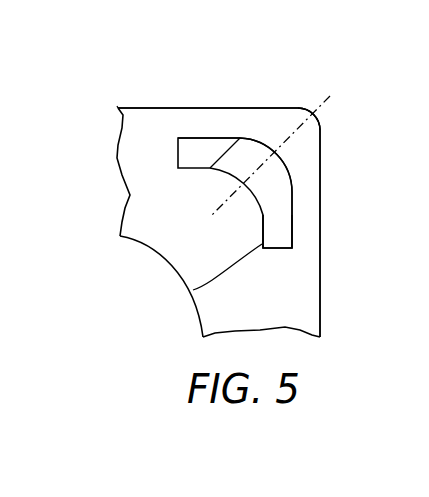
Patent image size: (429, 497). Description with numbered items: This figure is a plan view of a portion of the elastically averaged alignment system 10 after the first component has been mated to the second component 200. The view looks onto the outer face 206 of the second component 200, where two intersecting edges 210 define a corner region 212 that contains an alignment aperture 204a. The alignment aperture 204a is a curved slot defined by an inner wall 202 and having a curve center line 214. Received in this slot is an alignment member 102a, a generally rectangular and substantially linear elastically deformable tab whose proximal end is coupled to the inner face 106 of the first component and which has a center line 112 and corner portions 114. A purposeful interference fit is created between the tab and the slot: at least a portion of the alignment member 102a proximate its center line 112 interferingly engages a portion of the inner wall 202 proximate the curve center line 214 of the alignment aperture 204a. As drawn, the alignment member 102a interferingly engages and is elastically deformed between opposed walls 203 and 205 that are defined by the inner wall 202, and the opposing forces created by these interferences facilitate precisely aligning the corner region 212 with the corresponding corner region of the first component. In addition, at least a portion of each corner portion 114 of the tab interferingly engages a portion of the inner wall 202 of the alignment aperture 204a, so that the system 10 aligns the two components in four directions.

The elastically averaged alignment system 10 is at (337, 120).
The alignment member 102a is at (240, 152).
The inner face 106 is at (197, 150).
The center line 112 is at (288, 120).
The corner portion 114 is at (242, 140).
The second component 200 is at (288, 310).
The inner wall 202 is at (288, 237).
The opposed wall 203 is at (292, 226).
The alignment aperture 204a is at (193, 290).
The opposed wall 205 is at (260, 239).
The outer face 206 is at (153, 125).
The edge 210 is at (183, 108).
The corner region 212 is at (297, 144).
The curve center line 214 is at (365, 47).